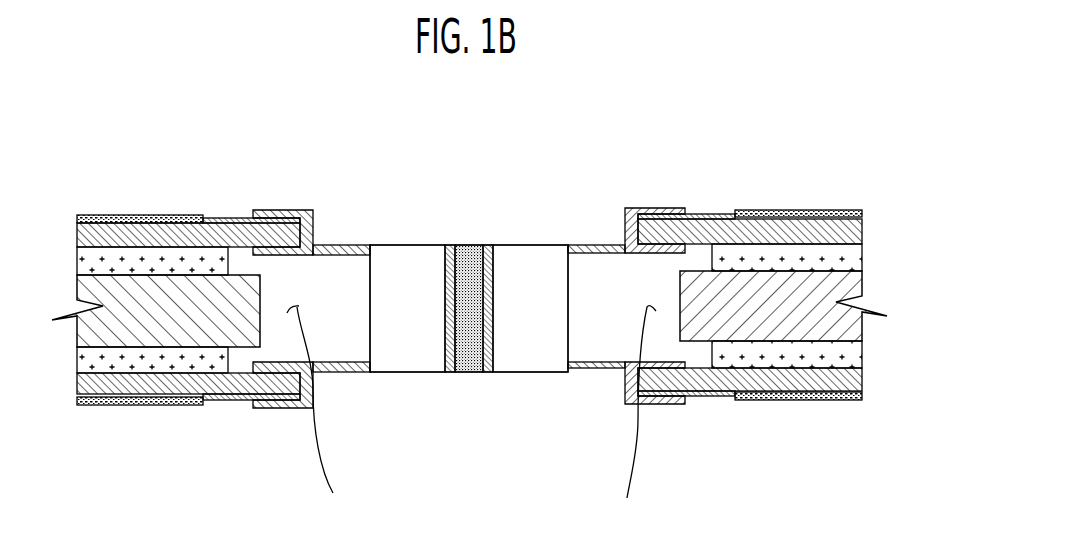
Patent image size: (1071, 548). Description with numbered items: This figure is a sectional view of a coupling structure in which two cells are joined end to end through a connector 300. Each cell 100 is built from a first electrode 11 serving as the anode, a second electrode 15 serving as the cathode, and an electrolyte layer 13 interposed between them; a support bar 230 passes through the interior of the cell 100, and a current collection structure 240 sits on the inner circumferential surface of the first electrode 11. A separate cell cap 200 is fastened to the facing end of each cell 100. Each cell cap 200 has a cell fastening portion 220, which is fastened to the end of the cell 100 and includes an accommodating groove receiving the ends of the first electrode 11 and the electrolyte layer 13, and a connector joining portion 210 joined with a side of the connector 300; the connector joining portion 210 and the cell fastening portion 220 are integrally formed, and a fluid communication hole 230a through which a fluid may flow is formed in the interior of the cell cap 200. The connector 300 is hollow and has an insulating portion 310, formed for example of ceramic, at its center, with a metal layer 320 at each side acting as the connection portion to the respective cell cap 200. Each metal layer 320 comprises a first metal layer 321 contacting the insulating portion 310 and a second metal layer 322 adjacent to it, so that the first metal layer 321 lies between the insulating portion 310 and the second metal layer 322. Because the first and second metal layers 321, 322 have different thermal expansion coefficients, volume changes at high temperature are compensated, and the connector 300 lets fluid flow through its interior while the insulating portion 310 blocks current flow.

The cell 100 is at (469, 297).
The first electrode 11 is at (243, 400).
The electrolyte layer 13 is at (220, 394).
The second electrode 15 is at (142, 407).
The cell cap 200 is at (463, 308).
The connector joining portion 210 is at (345, 372).
The cell fastening portion 220 is at (280, 408).
The support bar 230 is at (112, 303).
The fluid communication hole 230a is at (471, 416).
The current collection structure 240 is at (192, 262).
The connector 300 is at (475, 311).
The insulating portion 310 is at (467, 353).
The metal layer 320 is at (475, 311).
The first metal layer 321 is at (448, 290).
The second metal layer 322 is at (407, 272).